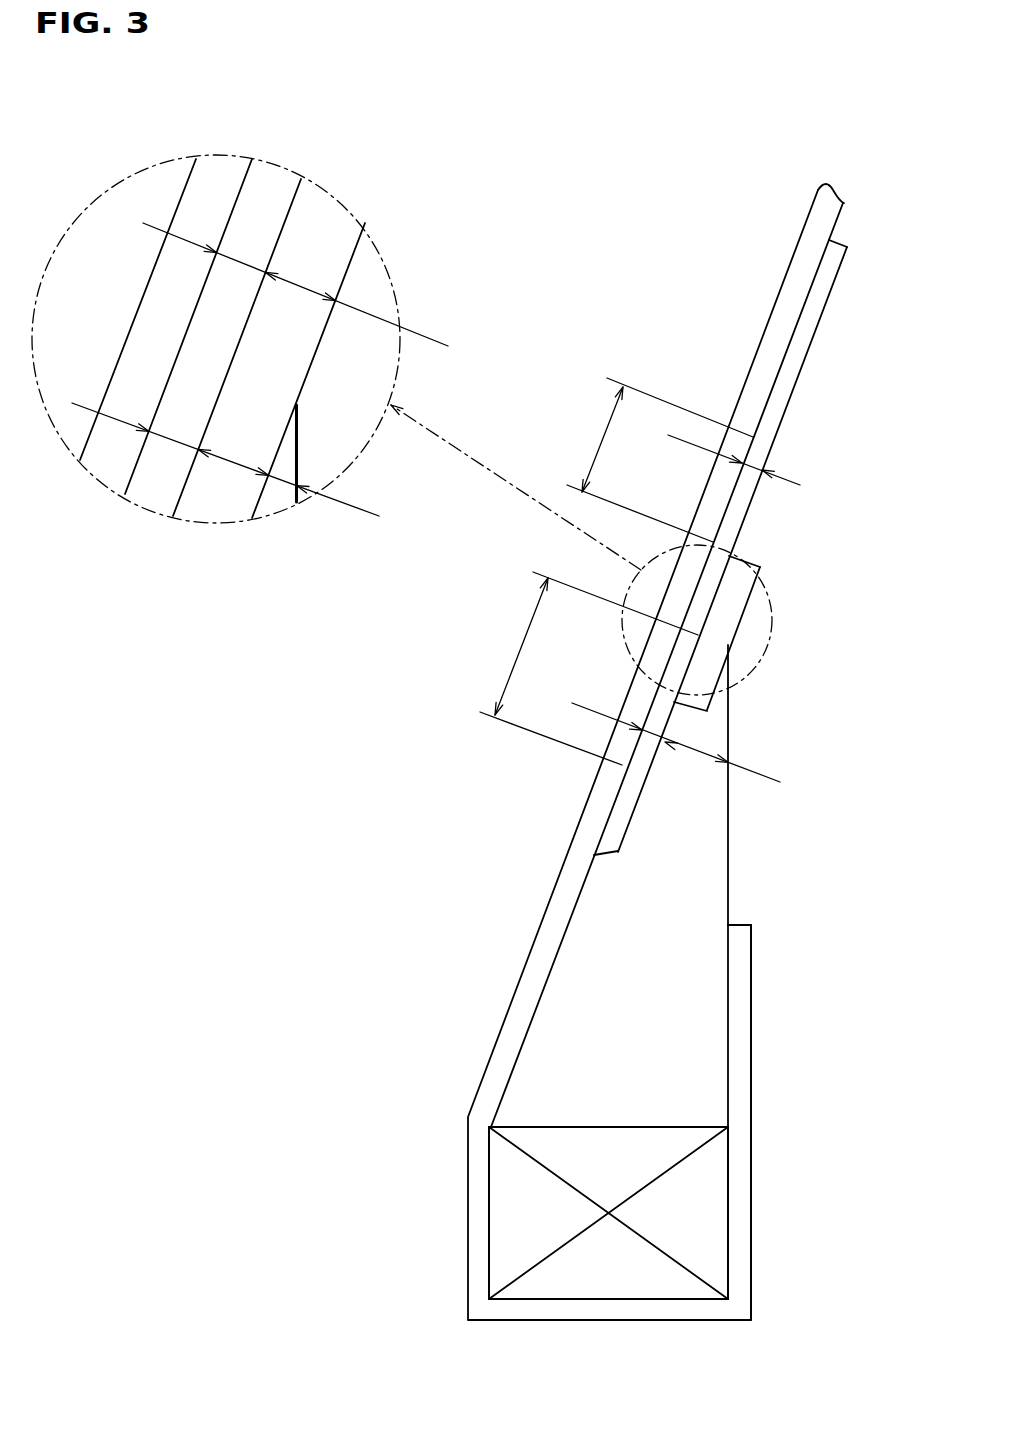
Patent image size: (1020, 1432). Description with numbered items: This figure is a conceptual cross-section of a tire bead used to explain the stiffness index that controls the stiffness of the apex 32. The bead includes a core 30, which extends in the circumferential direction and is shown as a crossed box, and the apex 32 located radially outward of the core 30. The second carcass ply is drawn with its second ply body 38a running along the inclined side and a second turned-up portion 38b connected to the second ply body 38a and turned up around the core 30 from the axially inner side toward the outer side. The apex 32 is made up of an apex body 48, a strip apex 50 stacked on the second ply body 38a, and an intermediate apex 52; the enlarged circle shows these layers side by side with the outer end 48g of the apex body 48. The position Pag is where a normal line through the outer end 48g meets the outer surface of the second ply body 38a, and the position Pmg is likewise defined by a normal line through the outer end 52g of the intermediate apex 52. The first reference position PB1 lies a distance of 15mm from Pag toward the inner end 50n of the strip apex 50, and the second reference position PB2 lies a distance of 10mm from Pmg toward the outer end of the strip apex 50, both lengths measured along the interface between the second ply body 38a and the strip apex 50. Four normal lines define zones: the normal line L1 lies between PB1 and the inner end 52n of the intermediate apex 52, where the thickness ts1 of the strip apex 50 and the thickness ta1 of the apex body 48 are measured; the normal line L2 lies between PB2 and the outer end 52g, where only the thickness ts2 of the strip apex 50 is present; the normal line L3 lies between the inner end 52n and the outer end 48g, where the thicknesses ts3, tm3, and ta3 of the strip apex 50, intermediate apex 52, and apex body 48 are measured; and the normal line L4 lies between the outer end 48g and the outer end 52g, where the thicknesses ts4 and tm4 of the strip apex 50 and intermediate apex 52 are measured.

The core 30 is at (700, 1201).
The apex 32 is at (459, 739).
The second ply body 38a is at (525, 1007).
The second turned-up portion 38b is at (739, 1039).
The apex body 48 is at (579, 852).
The outer end of the apex body 48g is at (730, 642).
The strip apex 50 is at (530, 485).
The inner end of the strip apex 50n is at (597, 852).
The intermediate apex 52 is at (563, 457).
The outer end of the intermediate apex 52g is at (745, 560).
The inner end of the intermediate apex 52n is at (690, 715).
The normal line L1 is at (584, 705).
The normal line L2 is at (697, 447).
The normal line L3 is at (353, 520).
The normal line L4 is at (428, 332).
The thickness of the strip apex at L1 ts1 is at (650, 740).
The thickness of the strip apex at L2 ts2 is at (772, 455).
The thickness of the strip apex at L3 ts3 is at (165, 441).
The thickness of the strip apex at L4 ts4 is at (250, 252).
The thickness of the intermediate apex at L3 tm3 is at (228, 466).
The thickness of the intermediate apex at L4 tm4 is at (288, 276).
The thickness of the apex body at L1 ta1 is at (697, 755).
The thickness of the apex body at L3 ta3 is at (288, 482).
The first reference position PB1 is at (632, 773).
The second reference position PB2 is at (757, 438).
The outer end corresponding position of the intermediate apex Pmg is at (713, 532).
The outer end corresponding position of the apex body Pag is at (700, 708).
The distance from Pmg to PB2 10mm is at (642, 460).
The distance from Pag to PB1 15mm is at (575, 668).